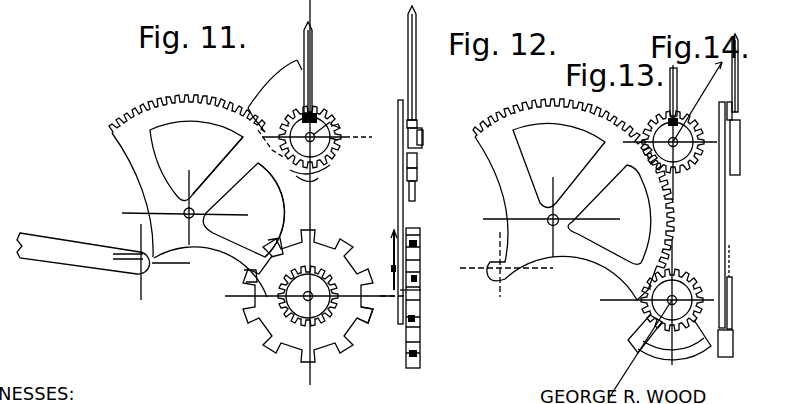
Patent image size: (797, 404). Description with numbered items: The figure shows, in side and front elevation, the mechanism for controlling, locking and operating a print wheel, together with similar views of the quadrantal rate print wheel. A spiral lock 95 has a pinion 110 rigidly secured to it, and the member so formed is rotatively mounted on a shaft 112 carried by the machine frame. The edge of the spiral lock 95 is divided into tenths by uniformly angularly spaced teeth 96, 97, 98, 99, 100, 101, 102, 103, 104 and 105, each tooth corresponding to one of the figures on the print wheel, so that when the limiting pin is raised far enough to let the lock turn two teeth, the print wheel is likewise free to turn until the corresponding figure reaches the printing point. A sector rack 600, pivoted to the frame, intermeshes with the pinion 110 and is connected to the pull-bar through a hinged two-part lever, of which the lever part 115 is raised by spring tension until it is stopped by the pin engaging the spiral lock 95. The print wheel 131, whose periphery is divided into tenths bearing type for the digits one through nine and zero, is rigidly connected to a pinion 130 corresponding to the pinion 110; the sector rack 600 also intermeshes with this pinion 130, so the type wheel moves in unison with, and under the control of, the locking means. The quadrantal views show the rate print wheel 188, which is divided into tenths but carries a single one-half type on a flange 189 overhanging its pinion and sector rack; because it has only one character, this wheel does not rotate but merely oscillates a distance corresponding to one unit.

In FIG. 11, the sector rack 600 is at (136, 122).
In FIG. 12, the sector rack 600 is at (404, 212).
In FIG. 13, the sector rack 600 is at (573, 199).
In FIG. 14, the sector rack 600 is at (722, 215).
In FIG. 11, the spiral lock 95 is at (293, 67).
In FIG. 12, the spiral lock 95 is at (417, 82).
In FIG. 13, the spiral lock 95 is at (673, 97).
In FIG. 14, the spiral lock 95 is at (732, 77).
In FIG. 11, the tooth 96 is at (330, 118).
In FIG. 13, the tooth 96 is at (672, 131).
In FIG. 11, the tooth 97 is at (340, 127).
In FIG. 12, the tooth 97 is at (418, 123).
In FIG. 11, the tooth 98 is at (340, 142).
In FIG. 12, the tooth 98 is at (424, 137).
In FIG. 14, the tooth 98 is at (735, 147).
In FIG. 11, the tooth 99 is at (323, 163).
In FIG. 12, the tooth 99 is at (418, 163).
In FIG. 11, the tooth 100 is at (315, 175).
In FIG. 12, the tooth 100 is at (417, 180).
In FIG. 11, the tooth 101 is at (285, 188).
In FIG. 11, the tooth 102 is at (252, 160).
In FIG. 11, the tooth 103 is at (250, 119).
In FIG. 11, the tooth 104 is at (266, 86).
In FIG. 11, the tooth 105 is at (300, 68).
In FIG. 11, the pinion 110 is at (312, 113).
In FIG. 11, the shaft 112 is at (318, 130).
In FIG. 11, the lever part 115 is at (63, 248).
In FIG. 12, the lever part 115 is at (394, 248).
In FIG. 11, the pinion 130 is at (296, 325).
In FIG. 12, the pinion 130 is at (421, 290).
In FIG. 11, the print wheel 131 is at (348, 323).
In FIG. 12, the print wheel 131 is at (421, 332).
In FIG. 13, the rate print wheel 188 is at (630, 346).
In FIG. 14, the rate print wheel 188 is at (733, 290).
In FIG. 13, the flange 189 is at (678, 352).
In FIG. 14, the flange 189 is at (718, 352).